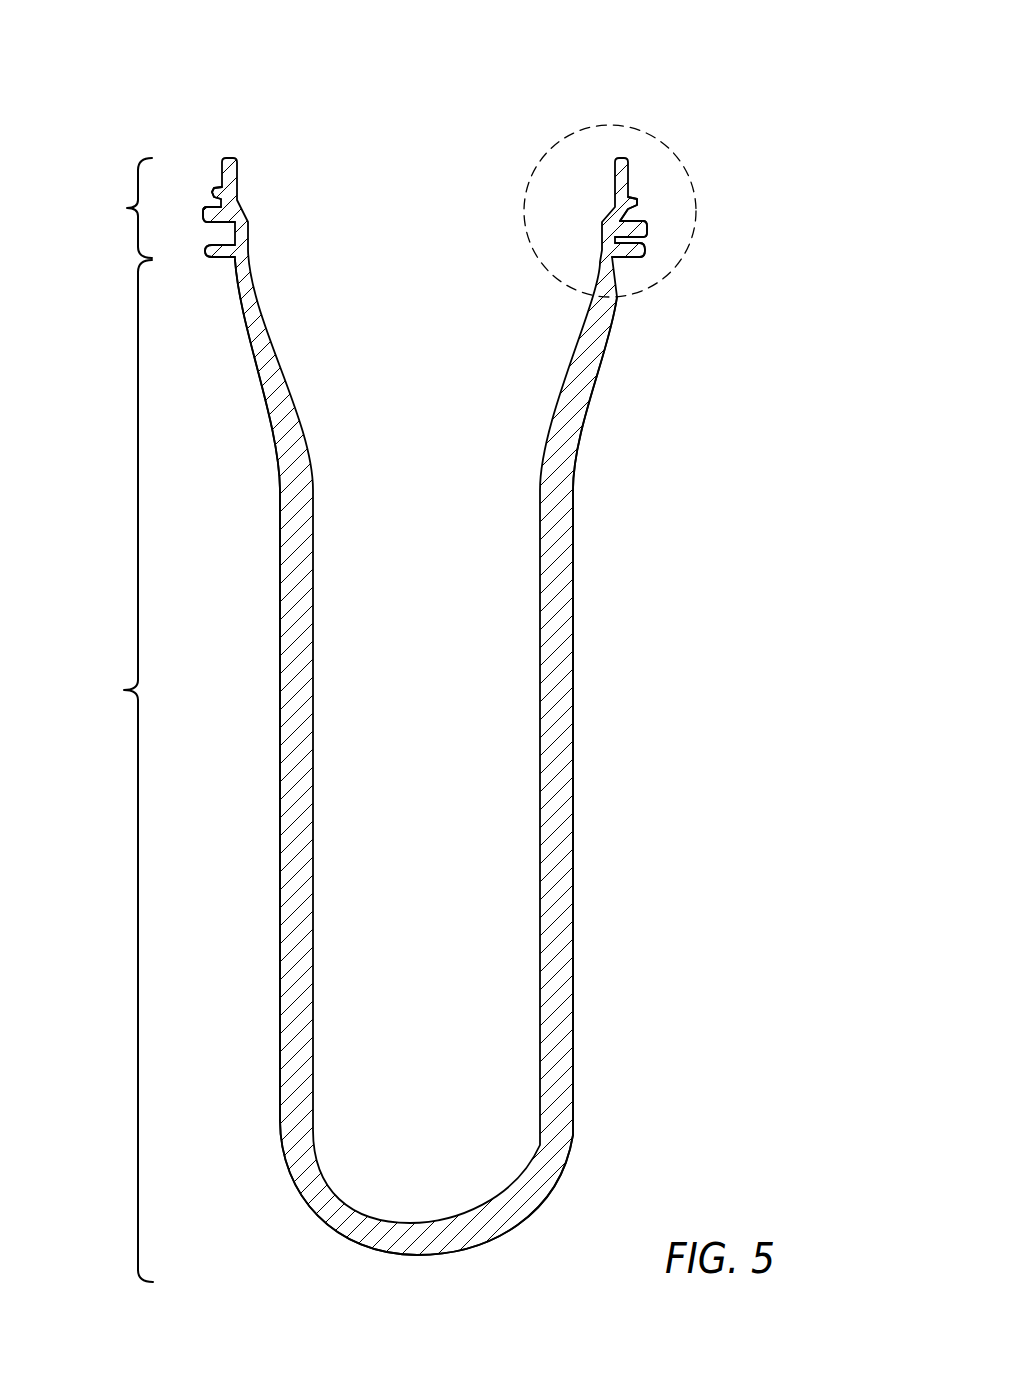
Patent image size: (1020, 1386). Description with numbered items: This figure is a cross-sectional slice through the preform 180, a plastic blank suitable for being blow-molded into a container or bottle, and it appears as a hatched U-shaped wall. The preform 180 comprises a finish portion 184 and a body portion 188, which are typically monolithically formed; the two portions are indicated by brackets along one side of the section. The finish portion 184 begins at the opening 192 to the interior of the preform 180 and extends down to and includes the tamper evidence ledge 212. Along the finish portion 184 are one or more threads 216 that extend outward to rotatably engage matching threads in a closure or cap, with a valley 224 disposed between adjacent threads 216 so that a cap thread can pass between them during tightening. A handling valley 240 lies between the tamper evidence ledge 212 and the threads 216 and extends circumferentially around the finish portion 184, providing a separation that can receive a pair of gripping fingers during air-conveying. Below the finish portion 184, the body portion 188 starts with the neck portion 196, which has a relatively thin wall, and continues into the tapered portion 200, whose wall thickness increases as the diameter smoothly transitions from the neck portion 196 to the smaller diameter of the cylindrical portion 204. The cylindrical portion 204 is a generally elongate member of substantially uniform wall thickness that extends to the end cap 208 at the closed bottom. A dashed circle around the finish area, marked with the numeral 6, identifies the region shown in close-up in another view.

The preform 180 is at (690, 997).
The finish portion 184 is at (120, 208).
The body portion 188 is at (117, 771).
The opening 192 is at (402, 122).
The neck portion 196 is at (237, 270).
The tapered portion 200 is at (583, 402).
The cylindrical portion 204 is at (280, 975).
The end cap 208 is at (423, 1256).
The tamper evidence ledge 212 is at (643, 252).
The threads 216 is at (211, 214).
The valley 224 is at (219, 199).
The handling valley 240 is at (618, 229).
The detail view indicator for FIG. 6 is at (597, 126).